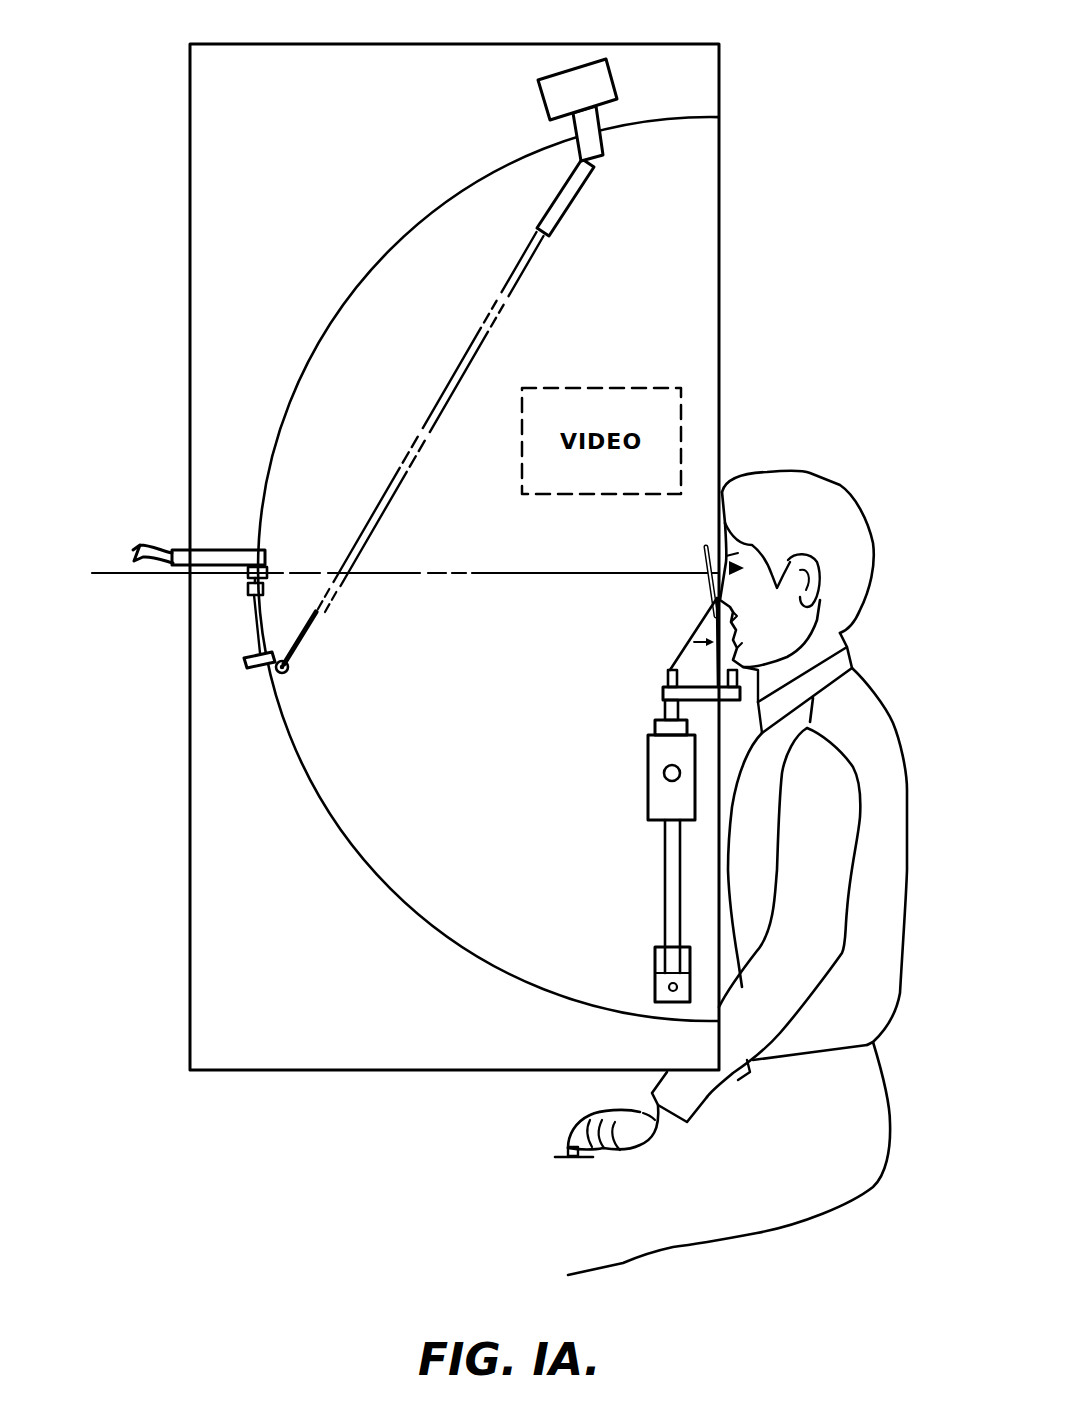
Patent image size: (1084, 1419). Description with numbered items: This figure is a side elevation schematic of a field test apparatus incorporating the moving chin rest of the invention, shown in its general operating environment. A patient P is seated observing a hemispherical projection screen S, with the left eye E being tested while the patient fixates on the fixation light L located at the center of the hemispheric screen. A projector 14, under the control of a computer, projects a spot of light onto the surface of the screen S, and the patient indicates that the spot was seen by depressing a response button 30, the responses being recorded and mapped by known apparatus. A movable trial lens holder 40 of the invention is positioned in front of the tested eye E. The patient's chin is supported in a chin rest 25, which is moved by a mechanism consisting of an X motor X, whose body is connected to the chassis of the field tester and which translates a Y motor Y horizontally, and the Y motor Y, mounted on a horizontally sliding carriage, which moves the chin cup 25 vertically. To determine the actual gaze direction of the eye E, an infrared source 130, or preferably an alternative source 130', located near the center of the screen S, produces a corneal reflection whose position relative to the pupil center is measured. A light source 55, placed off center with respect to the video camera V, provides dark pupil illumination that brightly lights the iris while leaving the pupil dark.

The projector 14 is at (577, 82).
The video camera V is at (203, 549).
The bracket ii is at (270, 558).
The fixation light L is at (267, 577).
The infrared source 130' is at (225, 624).
The infrared source 130 is at (236, 685).
The movable trial lens holder 40 is at (704, 551).
The light source 55 is at (669, 664).
The chin rest 25 is at (738, 647).
The left eye E is at (750, 558).
The patient P is at (845, 564).
The Y motor Y is at (652, 727).
The X motor X is at (660, 805).
The hemispherical projection screen S is at (408, 901).
The response button 30 is at (567, 1150).